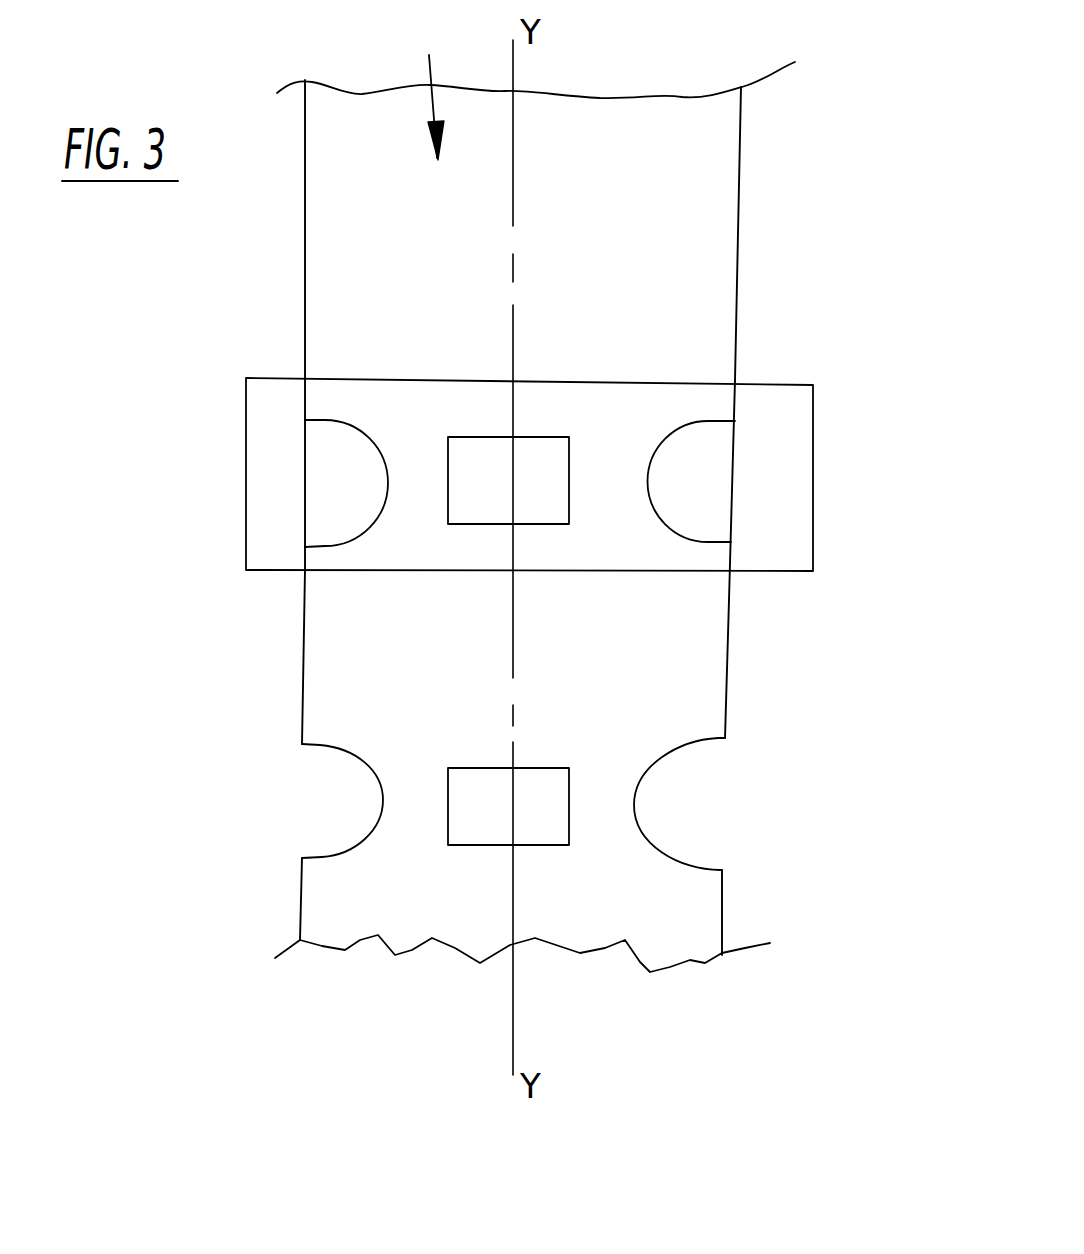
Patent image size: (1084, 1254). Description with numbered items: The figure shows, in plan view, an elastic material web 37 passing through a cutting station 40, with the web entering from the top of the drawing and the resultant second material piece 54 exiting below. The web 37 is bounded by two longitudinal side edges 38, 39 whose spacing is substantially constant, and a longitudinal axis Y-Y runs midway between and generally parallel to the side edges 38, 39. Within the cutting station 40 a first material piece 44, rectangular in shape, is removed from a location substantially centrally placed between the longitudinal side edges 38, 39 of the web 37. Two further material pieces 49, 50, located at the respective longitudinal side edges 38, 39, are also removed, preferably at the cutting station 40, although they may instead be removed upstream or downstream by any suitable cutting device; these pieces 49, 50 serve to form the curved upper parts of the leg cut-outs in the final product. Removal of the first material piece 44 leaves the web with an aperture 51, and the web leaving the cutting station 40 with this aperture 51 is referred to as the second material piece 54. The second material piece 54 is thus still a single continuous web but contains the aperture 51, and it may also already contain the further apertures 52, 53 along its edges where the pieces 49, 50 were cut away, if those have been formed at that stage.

The web 37 is at (660, 200).
The longitudinal side edge 38 is at (738, 283).
The longitudinal side edge 39 is at (307, 283).
The cutting station 40 is at (822, 473).
The first material piece 44 is at (552, 461).
The further material piece 49 is at (706, 488).
The further material piece 50 is at (327, 499).
The aperture 51 is at (540, 785).
The further aperture 52 is at (683, 817).
The further aperture 53 is at (333, 798).
The second material piece 54 is at (595, 660).